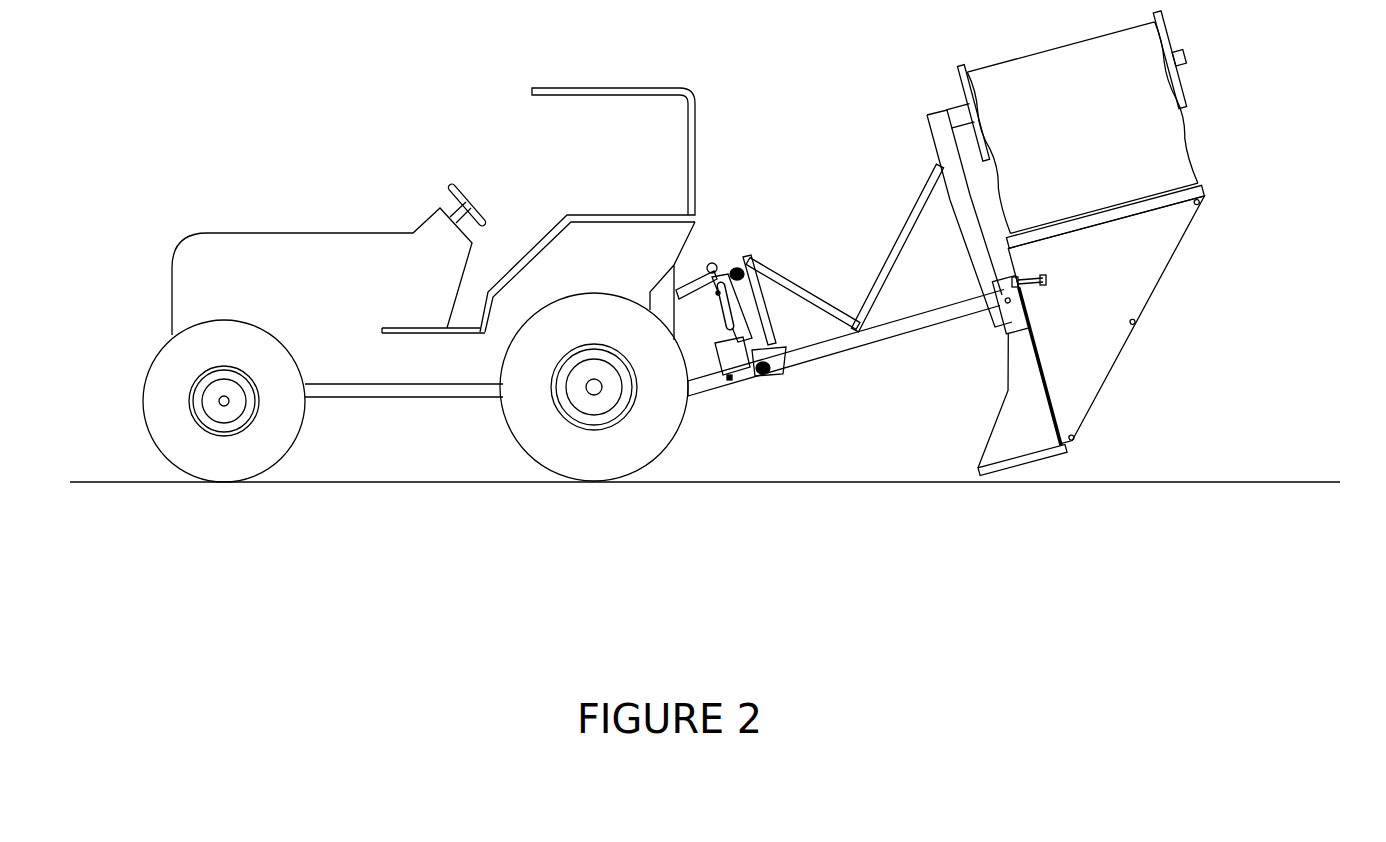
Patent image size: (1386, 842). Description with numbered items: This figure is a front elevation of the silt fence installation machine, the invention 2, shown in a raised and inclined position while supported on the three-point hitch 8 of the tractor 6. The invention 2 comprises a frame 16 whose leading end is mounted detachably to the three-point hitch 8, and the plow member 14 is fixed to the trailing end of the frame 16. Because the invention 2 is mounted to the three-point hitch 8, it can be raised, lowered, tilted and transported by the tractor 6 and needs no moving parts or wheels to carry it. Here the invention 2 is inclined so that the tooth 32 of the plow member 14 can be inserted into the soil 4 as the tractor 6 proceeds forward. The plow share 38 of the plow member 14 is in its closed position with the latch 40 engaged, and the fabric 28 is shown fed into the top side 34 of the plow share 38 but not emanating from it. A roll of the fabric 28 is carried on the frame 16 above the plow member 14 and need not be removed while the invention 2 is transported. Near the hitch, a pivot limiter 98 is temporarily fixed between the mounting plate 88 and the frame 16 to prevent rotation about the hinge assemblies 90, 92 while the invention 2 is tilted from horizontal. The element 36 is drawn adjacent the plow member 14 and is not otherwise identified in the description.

The invention 2 is at (920, 107).
The soil 4 is at (1338, 521).
The tractor 6 is at (340, 232).
The three-point hitch 8 is at (683, 272).
The plow member 14 is at (1132, 320).
The frame 16 is at (868, 343).
The fabric 28 is at (1090, 121).
The tooth 32 is at (1022, 460).
The top side 34 is at (1105, 216).
The side rail 36 is at (997, 372).
The plow share 38 is at (1134, 320).
The latch 40 is at (1032, 283).
The mounting plate 88 is at (740, 368).
The hinge assembly 90 is at (735, 270).
The hinge assembly 92 is at (765, 377).
The pivot limiter 98 is at (783, 355).